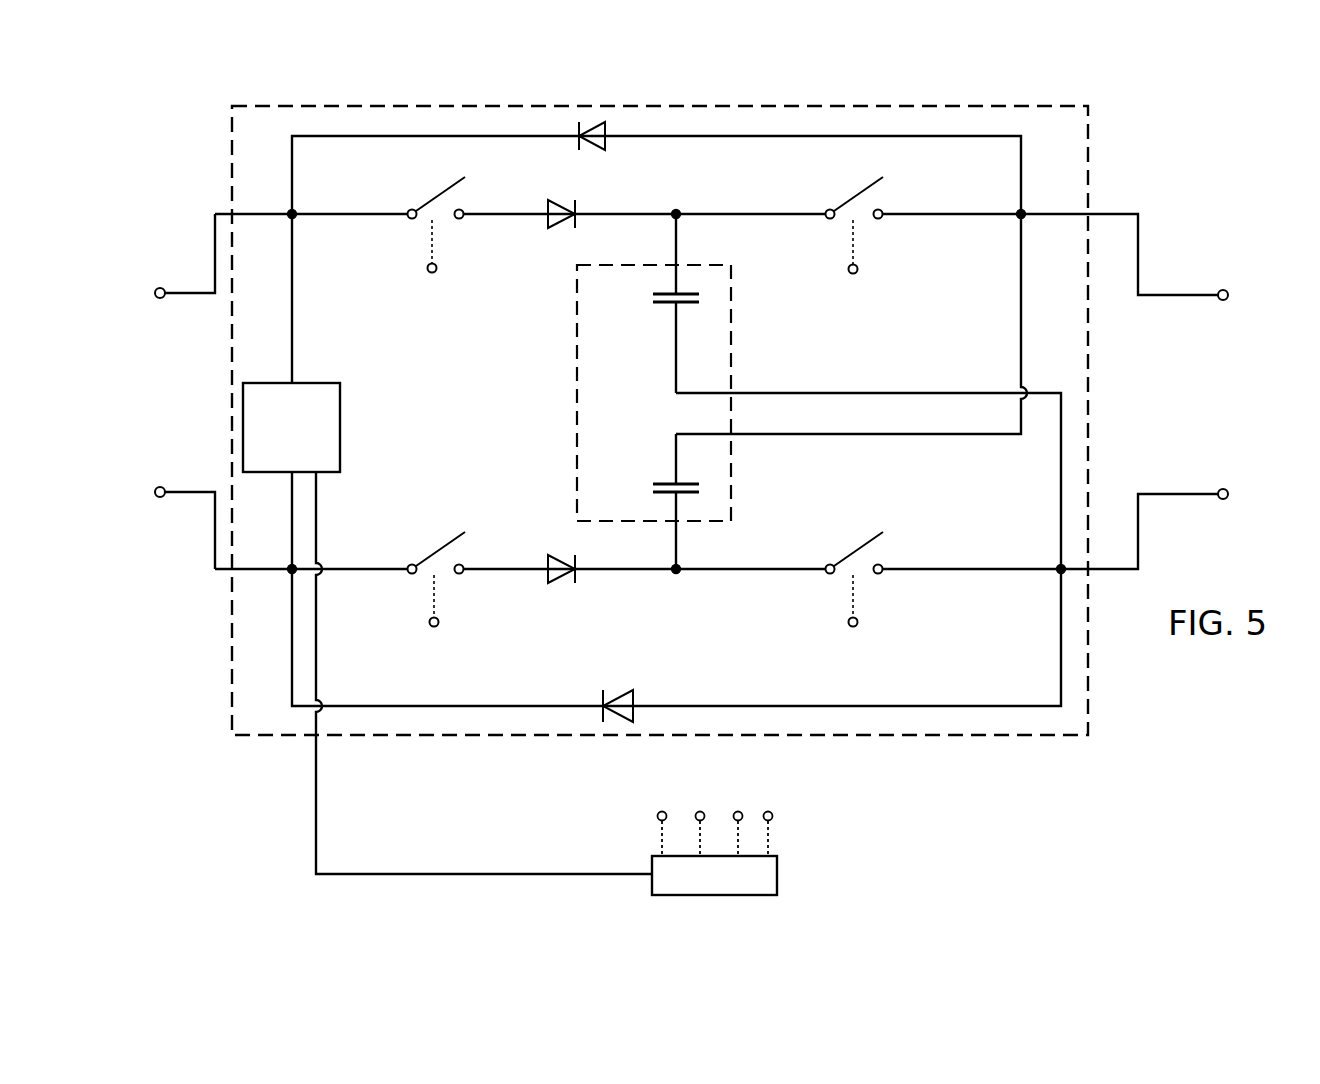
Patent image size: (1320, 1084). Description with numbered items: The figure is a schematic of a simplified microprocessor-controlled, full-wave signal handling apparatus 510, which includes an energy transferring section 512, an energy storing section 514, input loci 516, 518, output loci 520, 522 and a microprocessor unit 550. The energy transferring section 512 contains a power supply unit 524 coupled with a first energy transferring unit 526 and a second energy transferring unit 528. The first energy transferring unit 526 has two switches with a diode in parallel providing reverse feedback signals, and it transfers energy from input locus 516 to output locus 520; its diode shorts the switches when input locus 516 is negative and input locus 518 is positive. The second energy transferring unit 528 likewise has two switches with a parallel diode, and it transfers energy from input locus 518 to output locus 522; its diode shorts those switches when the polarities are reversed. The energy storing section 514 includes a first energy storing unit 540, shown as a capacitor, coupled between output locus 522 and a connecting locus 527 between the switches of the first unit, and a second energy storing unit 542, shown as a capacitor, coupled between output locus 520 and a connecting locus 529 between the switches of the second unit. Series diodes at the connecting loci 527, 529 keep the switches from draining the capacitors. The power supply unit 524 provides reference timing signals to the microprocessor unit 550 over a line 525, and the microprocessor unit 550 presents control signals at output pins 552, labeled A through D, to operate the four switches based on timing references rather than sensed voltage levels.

The signal handling apparatus 510 is at (701, 505).
The energy transferring section 512 is at (1088, 167).
The energy storing section 514 is at (616, 393).
The input locus 516 is at (160, 287).
The input locus 518 is at (160, 486).
The output locus 520 is at (1215, 302).
The output locus 522 is at (1217, 487).
The power supply unit 524 is at (336, 382).
The line 525 is at (415, 874).
The first energy transferring unit 526 is at (258, 169).
The connecting locus 527 is at (681, 217).
The second energy transferring unit 528 is at (256, 673).
The connecting locus 529 is at (680, 566).
The first energy storing unit 540 is at (663, 307).
The second energy storing unit 542 is at (664, 480).
The microprocessor unit 550 is at (777, 866).
The output pins 552 is at (796, 832).